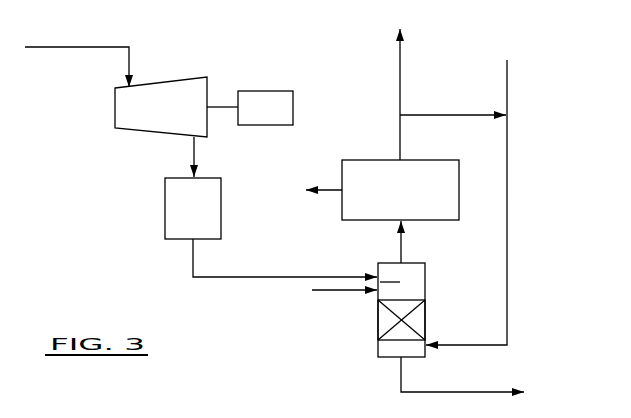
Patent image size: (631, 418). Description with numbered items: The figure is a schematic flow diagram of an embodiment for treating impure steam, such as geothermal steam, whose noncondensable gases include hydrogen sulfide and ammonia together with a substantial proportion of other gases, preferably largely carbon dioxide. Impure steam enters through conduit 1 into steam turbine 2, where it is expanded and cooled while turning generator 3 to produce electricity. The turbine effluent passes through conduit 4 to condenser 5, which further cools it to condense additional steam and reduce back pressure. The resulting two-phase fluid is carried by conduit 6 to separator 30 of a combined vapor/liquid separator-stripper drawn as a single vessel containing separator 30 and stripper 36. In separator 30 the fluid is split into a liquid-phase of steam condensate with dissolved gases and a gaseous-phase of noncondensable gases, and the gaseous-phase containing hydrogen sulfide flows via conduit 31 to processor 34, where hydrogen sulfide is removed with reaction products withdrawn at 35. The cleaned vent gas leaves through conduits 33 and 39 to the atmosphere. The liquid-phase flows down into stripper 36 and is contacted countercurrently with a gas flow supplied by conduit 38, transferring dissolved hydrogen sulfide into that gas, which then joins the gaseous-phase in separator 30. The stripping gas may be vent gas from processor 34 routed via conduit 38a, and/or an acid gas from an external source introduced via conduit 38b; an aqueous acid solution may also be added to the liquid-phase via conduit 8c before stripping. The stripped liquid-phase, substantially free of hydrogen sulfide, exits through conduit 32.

The conduit 1 is at (63, 46).
The steam turbine 2 is at (160, 82).
The generator 3 is at (255, 90).
The conduit 4 is at (197, 155).
The condenser 5 is at (222, 207).
The conduit 6 is at (305, 275).
The conduit 8c is at (340, 295).
The separator 30 is at (426, 283).
The conduit 31 is at (402, 247).
The conduit 32 is at (443, 388).
The conduit 33 is at (401, 145).
The processor 34 is at (457, 190).
The removal of reaction products 35 is at (330, 185).
The stripper 36 is at (426, 322).
The conduit 38 is at (508, 245).
The conduit 38a is at (418, 113).
The conduit 38b is at (507, 82).
The conduit 39 is at (402, 68).